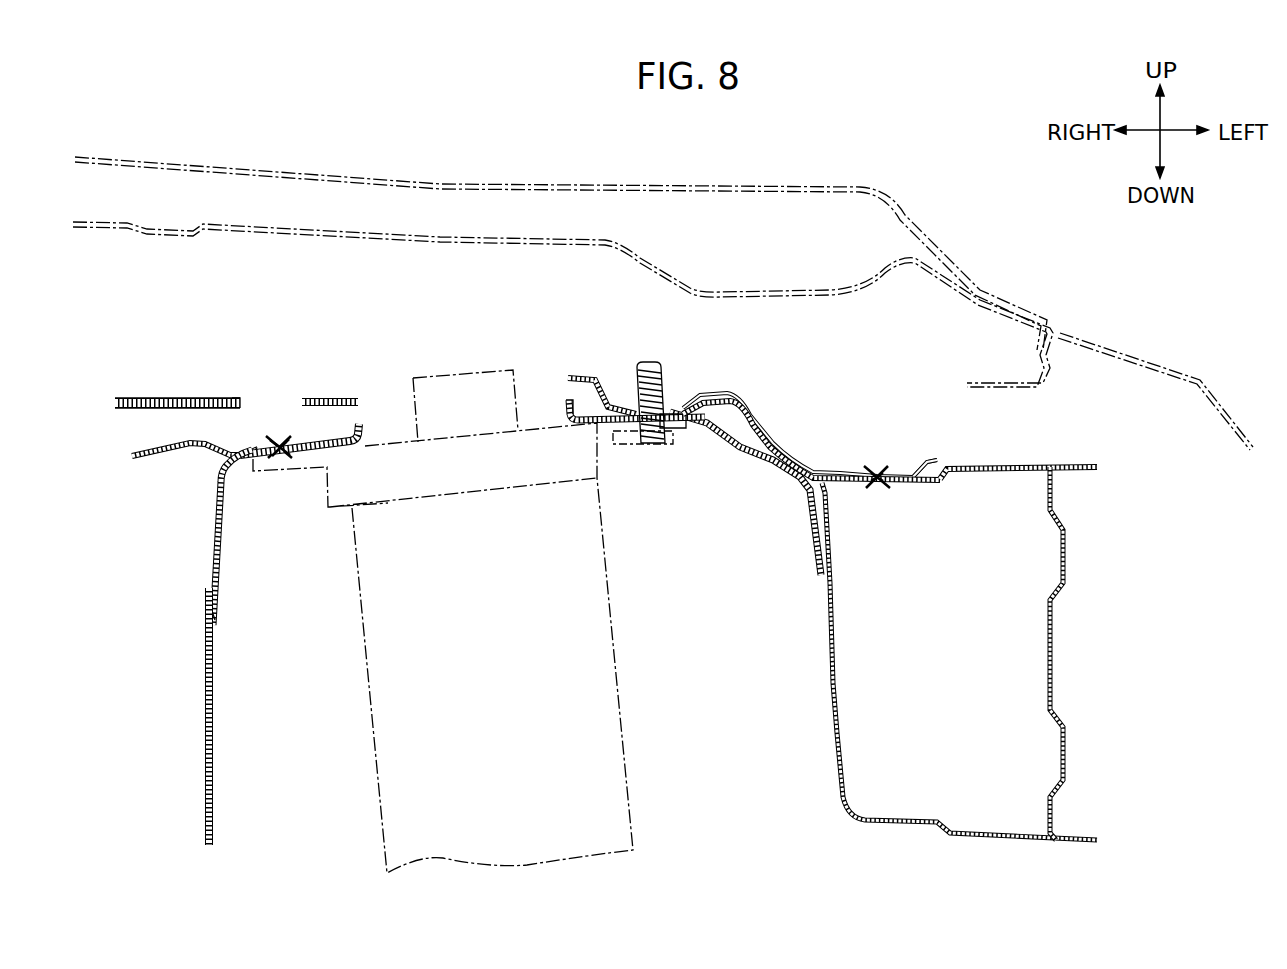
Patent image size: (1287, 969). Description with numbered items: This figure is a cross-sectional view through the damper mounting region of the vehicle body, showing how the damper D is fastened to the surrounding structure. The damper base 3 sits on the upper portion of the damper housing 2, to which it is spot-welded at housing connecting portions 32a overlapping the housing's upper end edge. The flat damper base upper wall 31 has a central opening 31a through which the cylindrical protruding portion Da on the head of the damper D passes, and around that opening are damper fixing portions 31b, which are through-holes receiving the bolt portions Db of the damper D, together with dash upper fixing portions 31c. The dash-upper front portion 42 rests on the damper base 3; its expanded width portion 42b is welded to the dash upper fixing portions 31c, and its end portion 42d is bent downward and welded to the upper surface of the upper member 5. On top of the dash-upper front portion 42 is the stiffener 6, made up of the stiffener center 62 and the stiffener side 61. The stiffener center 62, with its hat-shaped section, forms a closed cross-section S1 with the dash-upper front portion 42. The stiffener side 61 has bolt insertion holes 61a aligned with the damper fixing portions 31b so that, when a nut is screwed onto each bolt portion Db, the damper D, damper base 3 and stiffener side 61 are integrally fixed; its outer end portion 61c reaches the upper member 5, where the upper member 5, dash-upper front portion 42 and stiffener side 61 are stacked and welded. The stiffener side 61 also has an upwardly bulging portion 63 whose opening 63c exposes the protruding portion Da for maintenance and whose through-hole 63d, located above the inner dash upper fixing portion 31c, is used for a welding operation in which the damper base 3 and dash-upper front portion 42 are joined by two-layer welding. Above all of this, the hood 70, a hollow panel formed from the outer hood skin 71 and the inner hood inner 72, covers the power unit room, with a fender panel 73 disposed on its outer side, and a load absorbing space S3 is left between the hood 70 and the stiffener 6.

The damper housing 2 is at (204, 744).
The damper base 3 is at (209, 527).
The upper member 5 is at (1053, 670).
The stiffener 6 is at (198, 398).
The damper base upper wall 31 is at (593, 427).
The opening 31a is at (563, 408).
The damper fixing portion 31b is at (670, 442).
The dash upper fixing portion 31c is at (282, 457).
The housing connecting portion 32a is at (221, 607).
The dash-upper front portion 42 is at (170, 455).
The expanded width portion 42b is at (297, 433).
The end portion 42d is at (930, 455).
The stiffener side 61 is at (757, 405).
The bolt insertion hole 61a is at (667, 407).
The end portion 61c is at (853, 470).
The stiffener center 62 is at (137, 415).
The bulging portion 63 is at (580, 376).
The opening 63c is at (358, 402).
The through-hole 63d is at (241, 398).
The hood 70 is at (455, 113).
The hood skin 71 is at (473, 183).
The hood inner 72 is at (405, 232).
The fender panel 73 is at (1133, 350).
The damper D is at (612, 628).
The protruding portion Da is at (492, 368).
The bolt portion Db is at (642, 446).
The closed cross-section S1 is at (212, 433).
The load absorbing space S3 is at (300, 287).